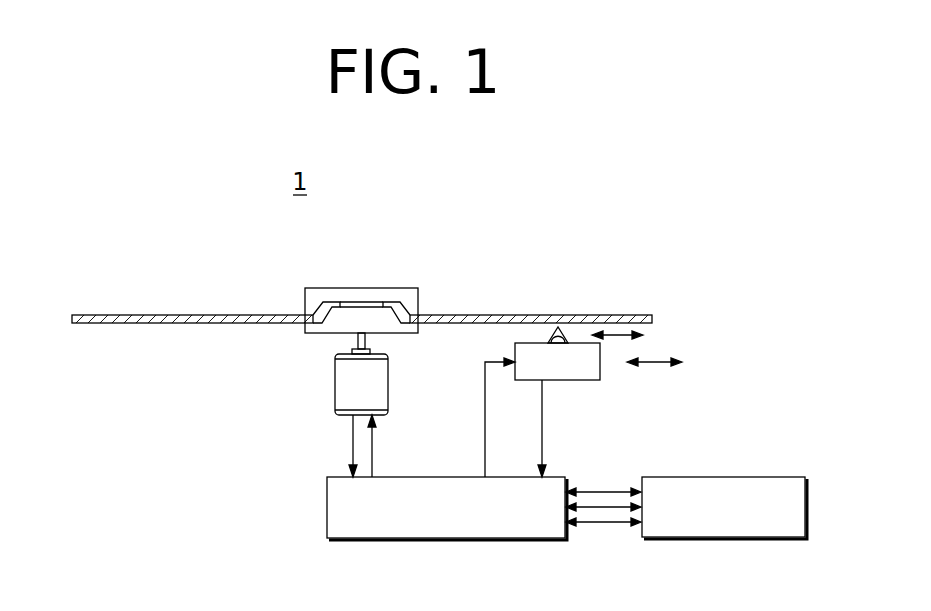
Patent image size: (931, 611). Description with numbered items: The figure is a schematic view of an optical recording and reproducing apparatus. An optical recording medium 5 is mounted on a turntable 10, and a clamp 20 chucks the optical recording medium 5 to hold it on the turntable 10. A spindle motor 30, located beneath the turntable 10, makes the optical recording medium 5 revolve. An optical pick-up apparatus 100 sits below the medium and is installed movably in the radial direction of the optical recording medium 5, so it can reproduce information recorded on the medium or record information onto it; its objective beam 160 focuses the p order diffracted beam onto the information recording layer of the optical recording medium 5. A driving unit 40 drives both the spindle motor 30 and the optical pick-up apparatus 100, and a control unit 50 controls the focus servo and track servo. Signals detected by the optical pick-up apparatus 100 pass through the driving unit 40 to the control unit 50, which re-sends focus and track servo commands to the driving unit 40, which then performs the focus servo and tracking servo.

The optical recording medium 5 is at (617, 318).
The turntable 10 is at (318, 334).
The clamp 20 is at (318, 288).
The spindle motor 30 is at (342, 403).
The driving unit 40 is at (327, 512).
The control unit 50 is at (713, 540).
The optical pick-up apparatus 100 is at (592, 376).
The objective beam 160 is at (549, 338).